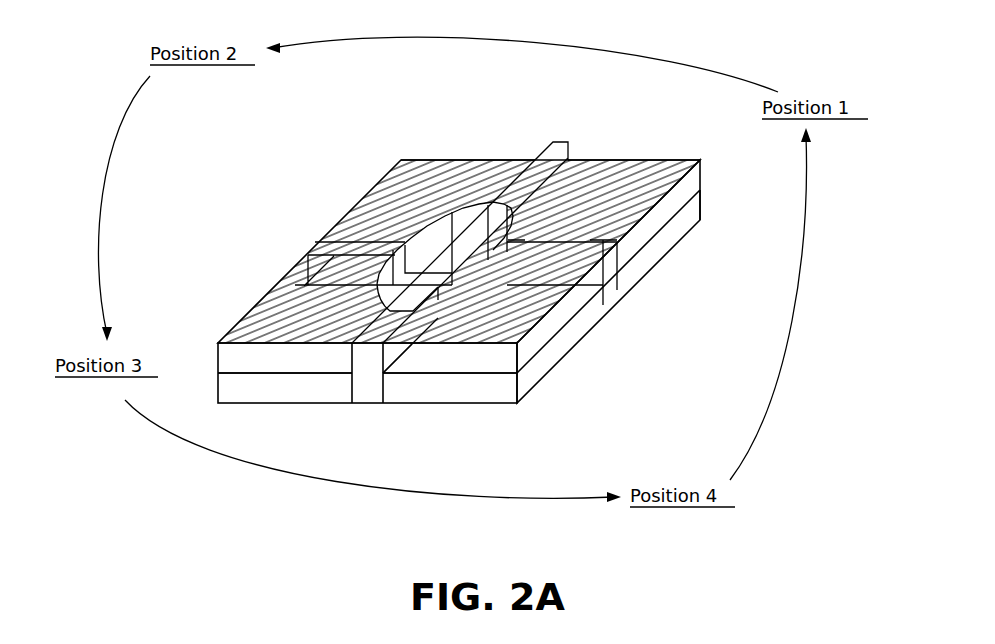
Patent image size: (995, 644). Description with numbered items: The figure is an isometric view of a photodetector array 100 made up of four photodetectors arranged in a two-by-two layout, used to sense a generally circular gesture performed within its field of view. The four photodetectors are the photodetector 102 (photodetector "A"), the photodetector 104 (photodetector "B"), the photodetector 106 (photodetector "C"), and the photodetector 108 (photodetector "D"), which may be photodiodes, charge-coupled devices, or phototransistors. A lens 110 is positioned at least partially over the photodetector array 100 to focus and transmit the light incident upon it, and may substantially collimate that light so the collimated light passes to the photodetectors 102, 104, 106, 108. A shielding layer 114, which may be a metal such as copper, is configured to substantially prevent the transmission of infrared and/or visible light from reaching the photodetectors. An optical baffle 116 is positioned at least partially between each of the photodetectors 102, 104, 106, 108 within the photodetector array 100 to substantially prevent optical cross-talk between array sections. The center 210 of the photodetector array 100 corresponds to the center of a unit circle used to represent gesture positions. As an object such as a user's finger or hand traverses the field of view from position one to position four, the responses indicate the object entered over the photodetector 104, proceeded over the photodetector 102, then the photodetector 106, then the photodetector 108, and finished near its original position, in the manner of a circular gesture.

The photodetector array 100 is at (366, 135).
The photodetector 102 is at (438, 193).
The photodetector 104 is at (638, 196).
The photodetector 106 is at (282, 362).
The photodetector 108 is at (483, 357).
The lens 110 is at (422, 252).
The shielding layer 114 is at (276, 292).
The optical baffle 116 is at (610, 268).
The center 210 is at (468, 205).